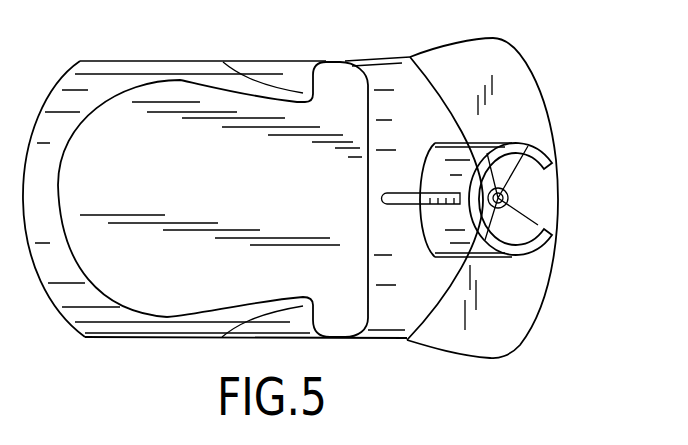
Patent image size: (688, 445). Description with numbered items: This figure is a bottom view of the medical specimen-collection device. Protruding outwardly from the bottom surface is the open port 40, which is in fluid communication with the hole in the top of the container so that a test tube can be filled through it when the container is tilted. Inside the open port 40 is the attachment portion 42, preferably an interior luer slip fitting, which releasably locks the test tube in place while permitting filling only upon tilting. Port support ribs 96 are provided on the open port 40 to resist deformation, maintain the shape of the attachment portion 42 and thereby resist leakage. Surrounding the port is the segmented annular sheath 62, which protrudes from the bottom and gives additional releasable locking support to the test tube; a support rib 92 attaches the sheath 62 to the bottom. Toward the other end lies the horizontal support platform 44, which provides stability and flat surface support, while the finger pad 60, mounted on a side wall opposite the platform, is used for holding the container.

The horizontal support platform 44 is at (195, 193).
The finger pad 60 is at (515, 330).
The segmented annular sheath 62 is at (481, 158).
The port support ribs 96 is at (522, 146).
The open port 40 is at (512, 204).
The attachment portion 42 is at (503, 194).
The support rib 92 is at (393, 192).